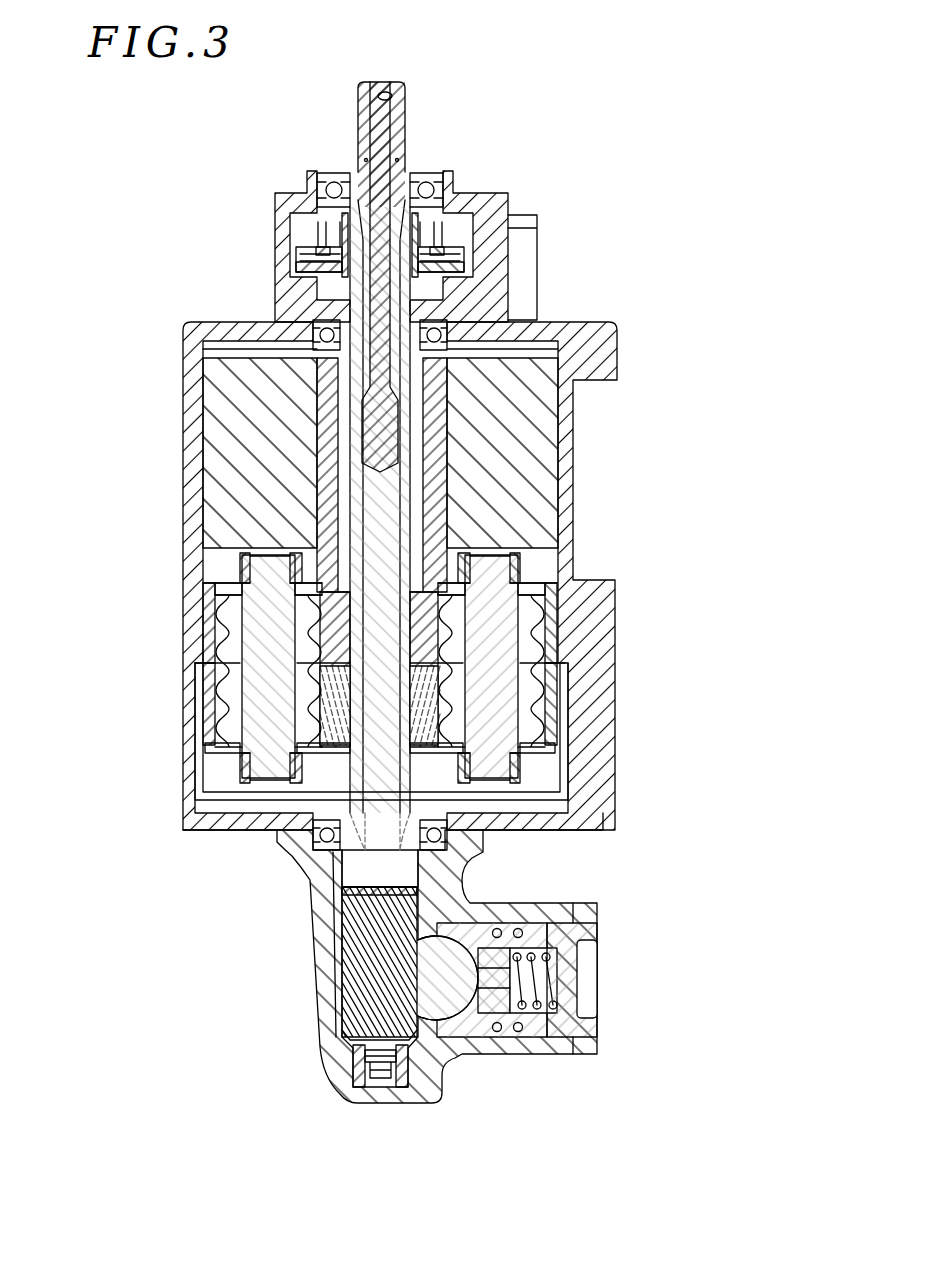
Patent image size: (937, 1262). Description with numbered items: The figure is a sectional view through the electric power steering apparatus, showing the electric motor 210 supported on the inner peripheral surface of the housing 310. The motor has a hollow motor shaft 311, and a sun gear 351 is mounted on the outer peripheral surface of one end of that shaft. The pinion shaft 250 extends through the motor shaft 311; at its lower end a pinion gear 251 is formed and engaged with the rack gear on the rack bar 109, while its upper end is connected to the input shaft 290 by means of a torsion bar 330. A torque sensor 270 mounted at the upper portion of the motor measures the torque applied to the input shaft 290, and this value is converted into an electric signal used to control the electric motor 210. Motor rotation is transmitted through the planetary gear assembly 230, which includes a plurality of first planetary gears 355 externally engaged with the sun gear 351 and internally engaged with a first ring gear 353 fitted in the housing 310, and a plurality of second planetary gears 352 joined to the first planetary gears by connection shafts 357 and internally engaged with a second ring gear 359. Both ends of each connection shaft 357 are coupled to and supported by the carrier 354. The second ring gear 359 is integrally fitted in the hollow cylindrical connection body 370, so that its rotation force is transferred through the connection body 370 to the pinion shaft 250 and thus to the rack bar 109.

The rack bar 109 is at (475, 1022).
The electric motor 210 is at (537, 448).
The planetary gear assembly 230 is at (370, 658).
The pinion shaft 250 is at (357, 863).
The pinion gear 251 is at (353, 995).
The torque sensor 270 is at (460, 233).
The input shaft 290 is at (404, 97).
The housing 310 is at (612, 358).
The motor shaft 311 is at (323, 398).
The torsion bar 330 is at (376, 135).
The sun gear 351 is at (233, 600).
The second planetary gears 352 is at (230, 700).
The first ring gear 353 is at (212, 593).
The carrier 354 is at (311, 768).
The first planetary gears 355 is at (233, 653).
The connection shaft 357 is at (245, 582).
The second ring gear 359 is at (210, 727).
The connection body 370 is at (558, 793).